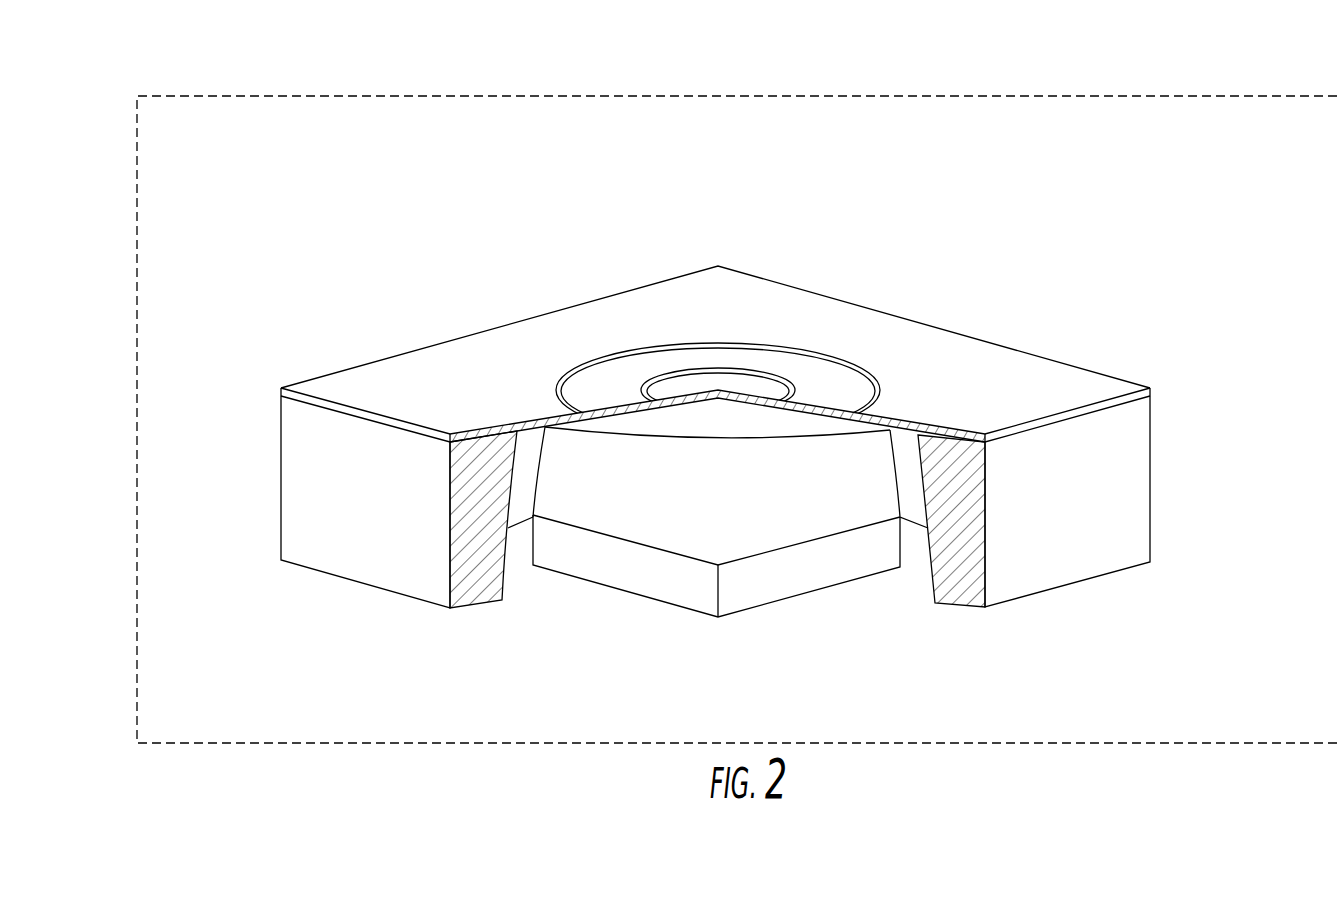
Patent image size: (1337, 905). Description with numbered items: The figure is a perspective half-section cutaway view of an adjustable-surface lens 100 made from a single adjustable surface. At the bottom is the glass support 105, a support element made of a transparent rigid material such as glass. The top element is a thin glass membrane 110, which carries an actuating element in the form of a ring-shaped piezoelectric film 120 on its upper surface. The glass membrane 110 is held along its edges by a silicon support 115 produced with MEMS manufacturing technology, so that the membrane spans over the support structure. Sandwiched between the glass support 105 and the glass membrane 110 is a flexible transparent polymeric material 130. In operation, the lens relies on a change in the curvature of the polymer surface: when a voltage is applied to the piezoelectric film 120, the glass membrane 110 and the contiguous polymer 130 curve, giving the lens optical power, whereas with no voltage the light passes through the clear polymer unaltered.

The adjustable-surface lens 100 is at (358, 96).
The glass support 105 is at (792, 572).
The glass membrane 110 is at (1152, 386).
The silicon support 115 is at (360, 550).
The ring-shaped piezoelectric film 120 is at (617, 385).
The flexible transparent polymeric material 130 is at (830, 492).